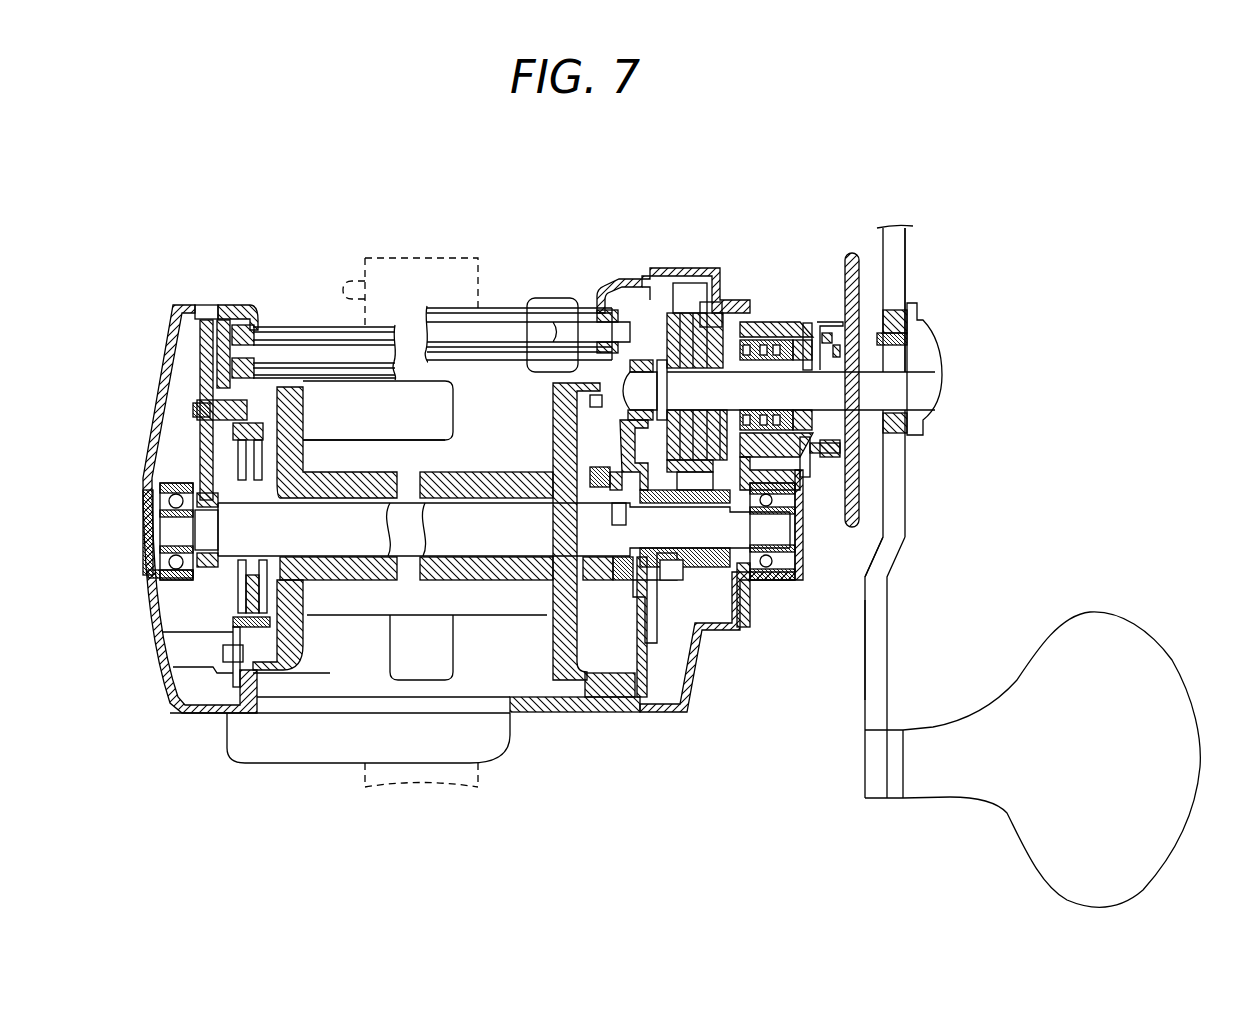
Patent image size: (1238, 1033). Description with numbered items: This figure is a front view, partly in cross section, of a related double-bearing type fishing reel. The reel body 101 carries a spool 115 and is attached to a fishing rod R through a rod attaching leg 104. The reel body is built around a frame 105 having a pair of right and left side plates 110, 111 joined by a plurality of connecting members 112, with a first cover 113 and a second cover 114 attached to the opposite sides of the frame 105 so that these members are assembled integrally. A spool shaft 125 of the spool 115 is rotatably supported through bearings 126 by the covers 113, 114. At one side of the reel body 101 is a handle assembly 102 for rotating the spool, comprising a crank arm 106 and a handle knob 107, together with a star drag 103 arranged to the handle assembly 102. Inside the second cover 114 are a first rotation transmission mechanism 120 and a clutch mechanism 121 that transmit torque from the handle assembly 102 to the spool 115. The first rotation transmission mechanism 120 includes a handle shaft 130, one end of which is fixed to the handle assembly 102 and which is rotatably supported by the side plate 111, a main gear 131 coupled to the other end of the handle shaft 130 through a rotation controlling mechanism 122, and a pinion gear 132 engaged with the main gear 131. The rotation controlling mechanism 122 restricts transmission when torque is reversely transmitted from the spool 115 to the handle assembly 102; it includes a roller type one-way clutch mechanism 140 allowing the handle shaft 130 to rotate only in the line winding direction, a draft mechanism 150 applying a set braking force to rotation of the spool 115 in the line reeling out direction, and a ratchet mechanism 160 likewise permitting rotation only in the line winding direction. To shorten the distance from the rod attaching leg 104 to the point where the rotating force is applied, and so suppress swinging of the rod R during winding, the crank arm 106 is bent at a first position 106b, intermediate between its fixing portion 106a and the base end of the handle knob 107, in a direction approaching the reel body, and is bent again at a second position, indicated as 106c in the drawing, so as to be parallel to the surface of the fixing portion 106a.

The reel body 101 is at (780, 205).
The handle assembly 102 is at (1075, 430).
The star drag 103 is at (848, 253).
The rod attaching leg 104 is at (455, 420).
The frame 105 is at (605, 722).
The crank arm 106 is at (895, 495).
The fixing portion 106a is at (918, 405).
The first position 106b is at (895, 535).
The knob mounting portion 106c is at (870, 580).
The handle knob 107 is at (1090, 648).
The side plate 110 is at (255, 305).
The side plate 111 is at (645, 648).
The connecting members 112 is at (345, 600).
The first cover 113 is at (175, 303).
The second cover 114 is at (697, 693).
The spool 115 is at (552, 397).
The first rotation transmission mechanism 120 is at (628, 298).
The clutch mechanism 121 is at (687, 612).
The rotation controlling mechanism 122 is at (745, 300).
The spool shaft 125 is at (445, 535).
The bearings 126 is at (175, 590).
The handle shaft 130 is at (912, 385).
The main gear 131 is at (750, 465).
The pinion gear 132 is at (707, 570).
The roller type one-way clutch mechanism 140 is at (779, 318).
The draft mechanism 150 is at (700, 285).
The ratchet mechanism 160 is at (658, 298).
The fishing rod R is at (441, 258).